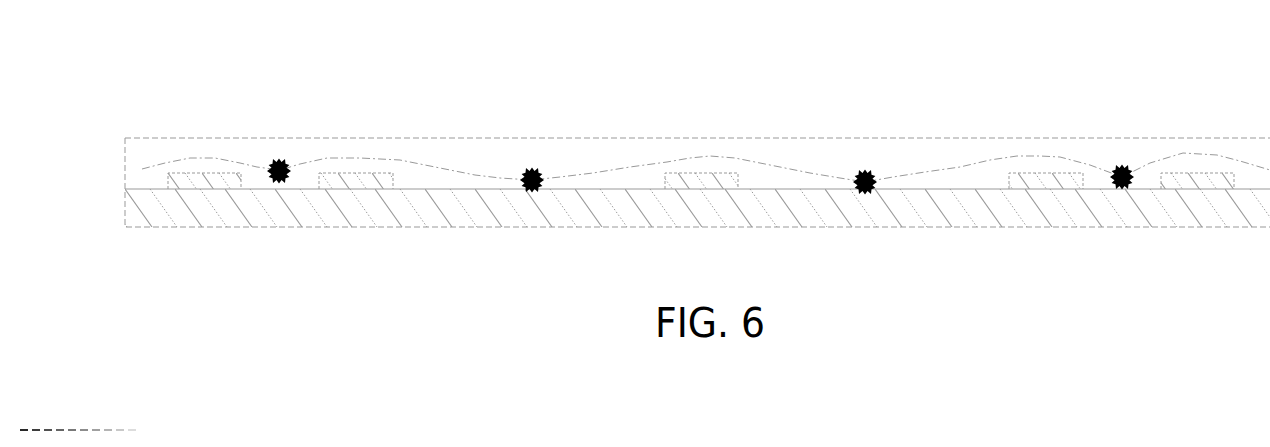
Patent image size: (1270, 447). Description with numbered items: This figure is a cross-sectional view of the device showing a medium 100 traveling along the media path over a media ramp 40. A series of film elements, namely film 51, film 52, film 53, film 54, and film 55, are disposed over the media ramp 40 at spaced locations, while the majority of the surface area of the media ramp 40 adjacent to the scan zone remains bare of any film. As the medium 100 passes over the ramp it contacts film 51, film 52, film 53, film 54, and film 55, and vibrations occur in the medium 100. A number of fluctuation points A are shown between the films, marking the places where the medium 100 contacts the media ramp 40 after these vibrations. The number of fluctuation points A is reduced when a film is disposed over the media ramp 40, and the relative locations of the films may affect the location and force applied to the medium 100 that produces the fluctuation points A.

The media ramp 40 is at (278, 212).
The medium 100 is at (592, 172).
The film 55 is at (178, 172).
The film 54 is at (328, 172).
The film 53 is at (672, 172).
The film 52 is at (1018, 172).
The film 51 is at (1170, 172).
The fluctuation points A is at (277, 163).